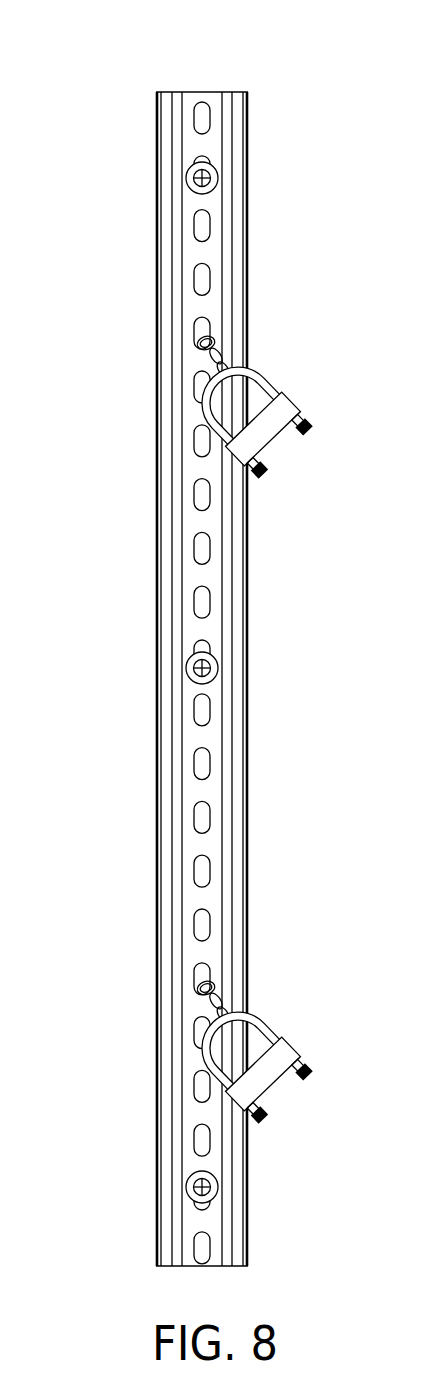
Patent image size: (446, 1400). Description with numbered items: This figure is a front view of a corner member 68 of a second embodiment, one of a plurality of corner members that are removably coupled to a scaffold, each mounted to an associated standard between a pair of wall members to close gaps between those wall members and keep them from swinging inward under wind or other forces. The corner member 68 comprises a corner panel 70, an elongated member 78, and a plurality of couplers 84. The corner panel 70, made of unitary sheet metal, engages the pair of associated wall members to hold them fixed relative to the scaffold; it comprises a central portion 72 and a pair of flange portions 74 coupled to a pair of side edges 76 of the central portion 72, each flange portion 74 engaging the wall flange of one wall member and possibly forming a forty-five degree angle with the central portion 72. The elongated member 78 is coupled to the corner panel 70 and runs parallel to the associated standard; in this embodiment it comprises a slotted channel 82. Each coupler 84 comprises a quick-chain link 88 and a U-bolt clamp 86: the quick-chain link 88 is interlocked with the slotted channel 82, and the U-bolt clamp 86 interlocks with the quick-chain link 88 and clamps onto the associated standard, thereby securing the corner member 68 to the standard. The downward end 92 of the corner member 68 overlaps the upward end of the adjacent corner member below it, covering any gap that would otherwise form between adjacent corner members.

The corner member 68 is at (220, 68).
The corner panel 70 is at (150, 87).
The central portion 72 is at (230, 92).
The flange portions 74 is at (160, 190).
The side edges 76 is at (158, 122).
The elongated member 78 is at (228, 590).
The slotted channel 82 is at (188, 483).
The couplers 84 is at (295, 378).
The U-bolt clamp 86 is at (287, 413).
The quick-chain link 88 is at (208, 337).
The downward end 92 is at (228, 1266).